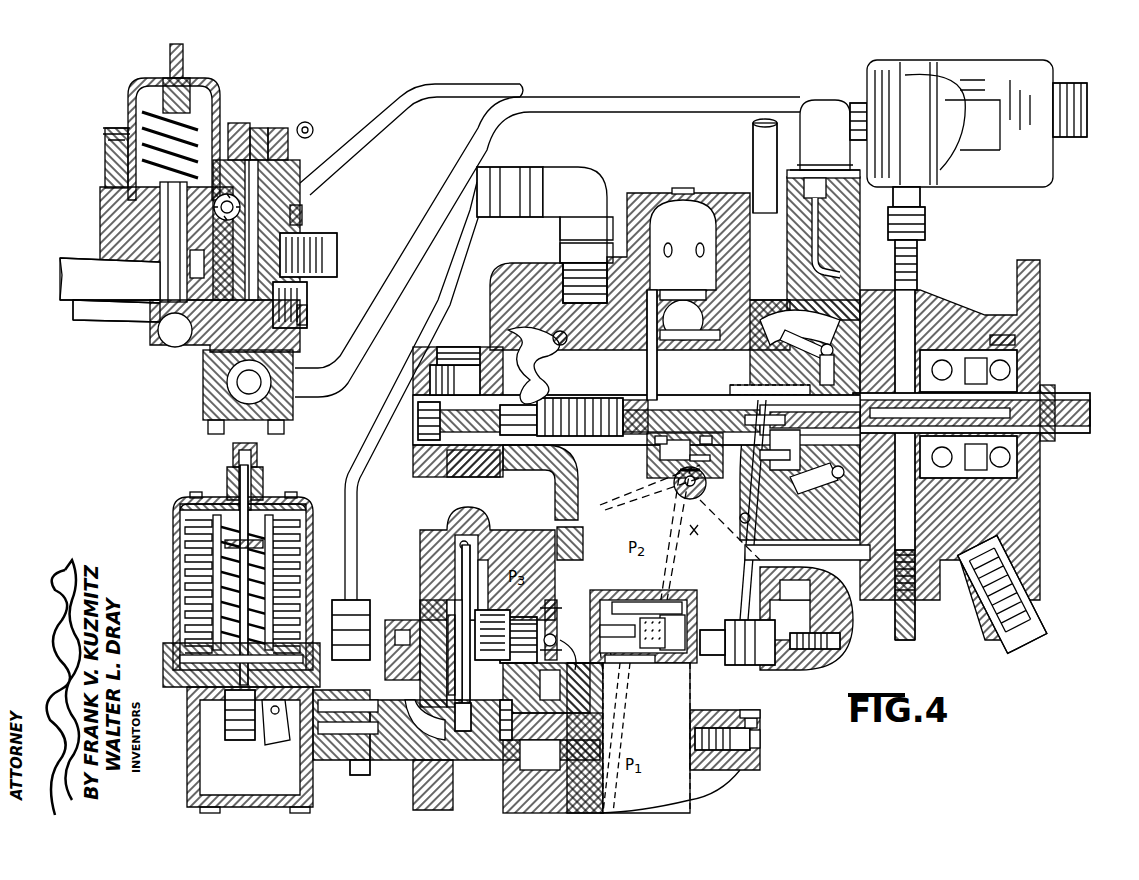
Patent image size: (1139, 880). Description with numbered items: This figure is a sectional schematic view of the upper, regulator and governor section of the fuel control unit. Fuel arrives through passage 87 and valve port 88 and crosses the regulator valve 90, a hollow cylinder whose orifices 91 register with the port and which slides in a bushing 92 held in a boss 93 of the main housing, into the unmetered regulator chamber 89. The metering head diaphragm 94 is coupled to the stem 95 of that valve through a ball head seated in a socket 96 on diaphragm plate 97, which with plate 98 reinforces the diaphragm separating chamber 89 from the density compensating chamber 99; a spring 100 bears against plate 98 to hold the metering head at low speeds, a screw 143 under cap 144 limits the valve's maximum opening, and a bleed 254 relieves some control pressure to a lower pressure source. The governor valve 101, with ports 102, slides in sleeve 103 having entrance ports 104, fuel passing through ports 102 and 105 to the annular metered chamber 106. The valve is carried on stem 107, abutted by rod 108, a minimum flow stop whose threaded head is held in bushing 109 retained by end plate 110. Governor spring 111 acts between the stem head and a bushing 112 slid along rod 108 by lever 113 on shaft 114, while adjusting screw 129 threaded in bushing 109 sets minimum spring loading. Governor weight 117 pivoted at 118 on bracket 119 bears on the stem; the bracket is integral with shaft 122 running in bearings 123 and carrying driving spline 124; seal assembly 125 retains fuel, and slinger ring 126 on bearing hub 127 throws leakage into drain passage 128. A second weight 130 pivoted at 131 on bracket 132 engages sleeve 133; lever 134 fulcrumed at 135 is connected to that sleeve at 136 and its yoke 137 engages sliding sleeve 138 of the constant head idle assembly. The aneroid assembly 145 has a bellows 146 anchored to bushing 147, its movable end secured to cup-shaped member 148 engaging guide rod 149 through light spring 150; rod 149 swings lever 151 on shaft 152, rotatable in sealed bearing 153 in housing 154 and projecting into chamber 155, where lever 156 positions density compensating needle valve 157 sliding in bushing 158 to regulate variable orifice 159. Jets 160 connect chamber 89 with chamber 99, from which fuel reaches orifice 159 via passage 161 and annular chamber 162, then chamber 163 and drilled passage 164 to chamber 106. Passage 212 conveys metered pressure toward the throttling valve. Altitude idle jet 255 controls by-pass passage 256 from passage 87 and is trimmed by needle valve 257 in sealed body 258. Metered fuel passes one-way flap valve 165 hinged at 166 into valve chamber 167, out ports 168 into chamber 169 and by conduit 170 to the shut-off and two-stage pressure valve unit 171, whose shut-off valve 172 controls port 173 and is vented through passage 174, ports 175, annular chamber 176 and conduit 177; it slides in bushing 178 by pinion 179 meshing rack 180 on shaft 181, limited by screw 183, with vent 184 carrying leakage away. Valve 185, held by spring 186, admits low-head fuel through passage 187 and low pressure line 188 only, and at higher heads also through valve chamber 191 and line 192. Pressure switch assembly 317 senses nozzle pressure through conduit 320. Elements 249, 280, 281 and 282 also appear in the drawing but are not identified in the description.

The passage 87 is at (660, 805).
The valve port 88 is at (655, 665).
The regulator chamber 89 is at (645, 527).
The regulator valve 90 is at (690, 612).
The orifices 91 is at (666, 633).
The bushing 92 is at (625, 600).
The boss 93 is at (672, 580).
The metering head diaphragm 94 is at (583, 555).
The stem 95 is at (563, 654).
The socket 96 is at (558, 610).
The diaphragm plate 97 is at (608, 665).
The plate 98 is at (502, 700).
The density compensating fuel chamber 99 is at (540, 695).
The spring 100 is at (522, 617).
The governor valve 101 is at (652, 462).
The ports 102 is at (655, 478).
The valve cage or sleeve 103 is at (655, 445).
The entrance ports 104 is at (660, 440).
The ports 105 is at (675, 475).
The annular valve chamber 106 is at (706, 483).
The valve stem 107 is at (625, 437).
The rod 108 is at (455, 460).
The bushing 109 is at (430, 380).
The end plate 110 is at (455, 347).
The governor spring 111 is at (580, 398).
The bushing 112 is at (518, 436).
The lever 113 is at (538, 372).
The shaft 114 is at (553, 340).
The governor weight 117 is at (800, 465).
The pivot 118 is at (814, 482).
The bracket 119 is at (838, 479).
The shaft 122 is at (1050, 385).
The bearings 123 is at (1012, 457).
The driving spline 124 is at (1080, 397).
The seal assembly 125 is at (815, 545).
The slinger ring 126 is at (925, 340).
The bearing hub or bushing 127 is at (1042, 365).
The drain passage 128 is at (916, 545).
The adjusting screw 129 is at (510, 475).
The governor weight 130 is at (800, 320).
The pivot 131 is at (804, 337).
The bracket 132 is at (829, 345).
The sleeve 133 is at (748, 478).
The lever 134 is at (750, 495).
The fulcrum 135 is at (750, 518).
The pivotal connection 136 is at (765, 398).
The fork or yoke 137 is at (735, 665).
The sliding sleeve 138 is at (745, 620).
The screw 143 is at (833, 660).
The cap 144 is at (842, 643).
The aneroid assembly 145 is at (184, 486).
The bellows or capsule 146 is at (270, 535).
The bushing 147 is at (300, 515).
The inverted cup-shaped member 148 is at (260, 560).
The connecting and guide rod 149 is at (186, 574).
The light loading spring 150 is at (195, 594).
The lever 151 is at (262, 745).
The shaft 152 is at (340, 745).
The sealed bearing 153 is at (352, 775).
The housing 154 is at (375, 660).
The chamber 155 is at (470, 731).
The lever 156 is at (425, 735).
The density compensating needle valve 157 is at (475, 628).
The bushing 158 is at (440, 610).
The variable orifice 159 is at (450, 630).
The density circuit control jets 160 is at (570, 598).
The passage 161 is at (500, 560).
The annular chamber 162 is at (480, 540).
The chamber 163 is at (458, 538).
The drilled passage 164 is at (598, 507).
The one-way flap valve 165 is at (648, 355).
The hinge 166 is at (752, 373).
The valve chamber 167 is at (662, 336).
The ports 168 is at (697, 329).
The chamber 169 is at (615, 326).
The conduit 170 is at (402, 292).
The fuel shut-off and two-stage nozzle pressure valve assembly 171 is at (270, 73).
The shut-off valve 172 is at (306, 314).
The port 173 is at (227, 365).
The passage 174 is at (250, 240).
The ports 175 is at (314, 152).
The annular chamber 176 is at (292, 160).
The conduit 177 is at (460, 95).
The bushing or bearing 178 is at (308, 290).
The pinion or rack gear 179 is at (240, 160).
The toothed rack 180 is at (272, 190).
The shaft 181 is at (258, 175).
The screw 183 is at (303, 212).
The vent 184 is at (300, 250).
The valve 185 is at (172, 229).
The spring 186 is at (128, 122).
The passage 187 is at (160, 345).
The low pressure fuel line 188 is at (88, 322).
The valve chamber 191 is at (150, 300).
The fuel line 192 is at (80, 262).
The passage 212 is at (692, 532).
The passage 249 is at (608, 790).
The bleed 254 is at (690, 545).
The altitude idle jet 255 is at (720, 772).
The by-pass passage 256 is at (760, 712).
The needle valve 257 is at (725, 752).
The sealed valve body 258 is at (760, 748).
The pipe 280 is at (753, 141).
The dome 281 is at (660, 215).
The seat 282 is at (700, 292).
The pressure switch assembly 317 is at (990, 63).
The conduit 320 is at (858, 103).